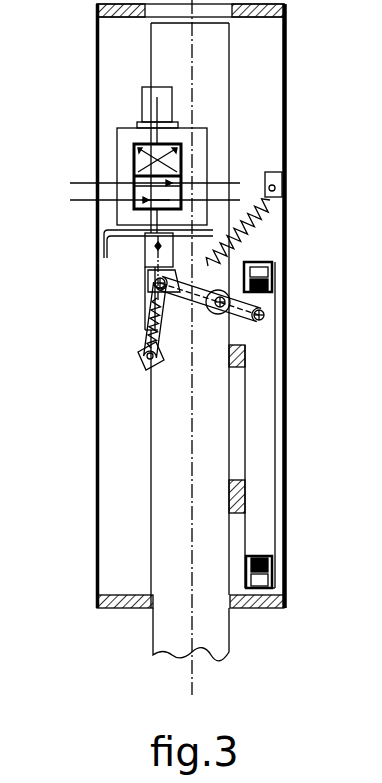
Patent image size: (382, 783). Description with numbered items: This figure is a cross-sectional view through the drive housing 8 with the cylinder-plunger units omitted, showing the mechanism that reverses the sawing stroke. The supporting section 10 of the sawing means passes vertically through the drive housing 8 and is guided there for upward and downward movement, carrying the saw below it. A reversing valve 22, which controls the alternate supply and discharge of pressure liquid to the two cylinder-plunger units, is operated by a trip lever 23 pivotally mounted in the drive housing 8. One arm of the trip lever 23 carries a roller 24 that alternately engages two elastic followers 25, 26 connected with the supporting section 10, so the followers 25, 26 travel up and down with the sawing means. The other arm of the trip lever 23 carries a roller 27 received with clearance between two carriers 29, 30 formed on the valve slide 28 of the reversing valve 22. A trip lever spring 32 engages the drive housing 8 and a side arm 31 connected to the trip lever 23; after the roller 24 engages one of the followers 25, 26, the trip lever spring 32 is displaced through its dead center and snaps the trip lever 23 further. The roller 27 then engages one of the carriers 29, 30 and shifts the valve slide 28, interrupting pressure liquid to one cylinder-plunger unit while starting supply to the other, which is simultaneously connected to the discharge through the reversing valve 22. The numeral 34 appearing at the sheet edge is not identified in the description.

The drive housing 8 is at (292, 383).
The supporting section 10 is at (210, 641).
The reversing valve 22 is at (122, 160).
The trip lever 23 is at (229, 318).
The roller 24 is at (262, 301).
The elastic follower 25 is at (266, 287).
The elastic follower 26 is at (270, 560).
The roller 27 is at (145, 308).
The valve slide 28 is at (140, 262).
The carrier 29 is at (145, 285).
The carrier 30 is at (140, 318).
The side arm 31 is at (136, 348).
The trip lever spring 32 is at (250, 228).
The element 34 is at (381, 704).